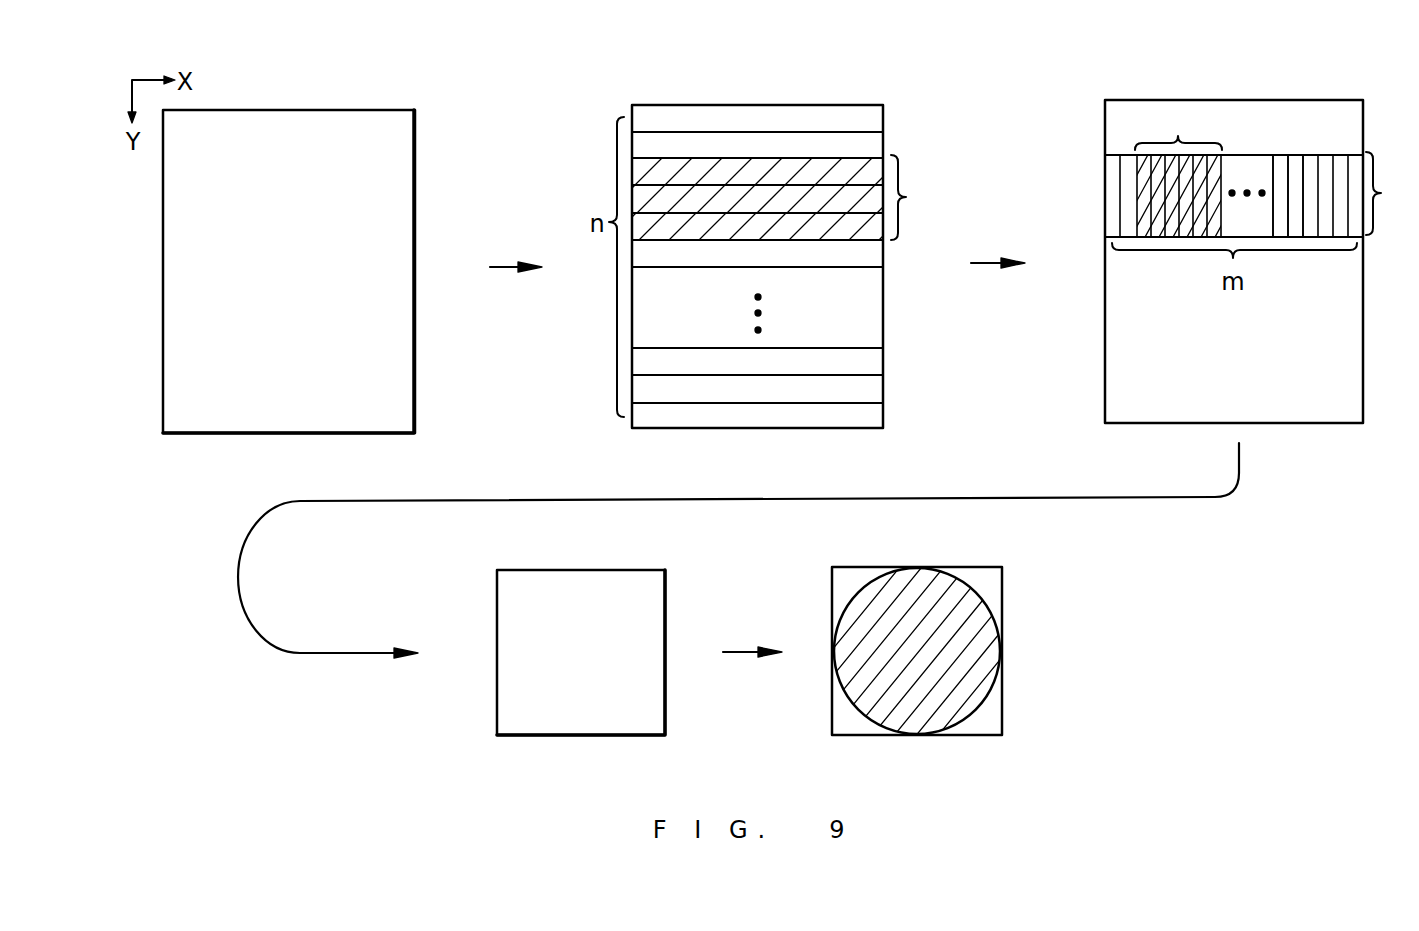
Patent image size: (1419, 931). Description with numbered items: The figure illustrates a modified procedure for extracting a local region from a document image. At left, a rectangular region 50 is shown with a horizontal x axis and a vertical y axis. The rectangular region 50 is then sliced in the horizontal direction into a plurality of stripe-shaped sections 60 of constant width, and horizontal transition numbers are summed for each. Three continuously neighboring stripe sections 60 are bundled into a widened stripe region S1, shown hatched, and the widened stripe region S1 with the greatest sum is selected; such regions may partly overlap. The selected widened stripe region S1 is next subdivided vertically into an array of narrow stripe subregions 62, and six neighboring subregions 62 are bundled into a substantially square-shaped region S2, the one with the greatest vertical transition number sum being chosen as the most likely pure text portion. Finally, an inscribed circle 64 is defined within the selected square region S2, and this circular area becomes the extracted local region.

The rectangular region 50 is at (345, 109).
The stripe-shaped sections 60 is at (868, 362).
The narrow stripe subregions 62 is at (1298, 165).
The inscribed circle 64 is at (985, 697).
The widened stripe region S1 is at (1155, 196).
The square-shaped region S2 is at (668, 590).